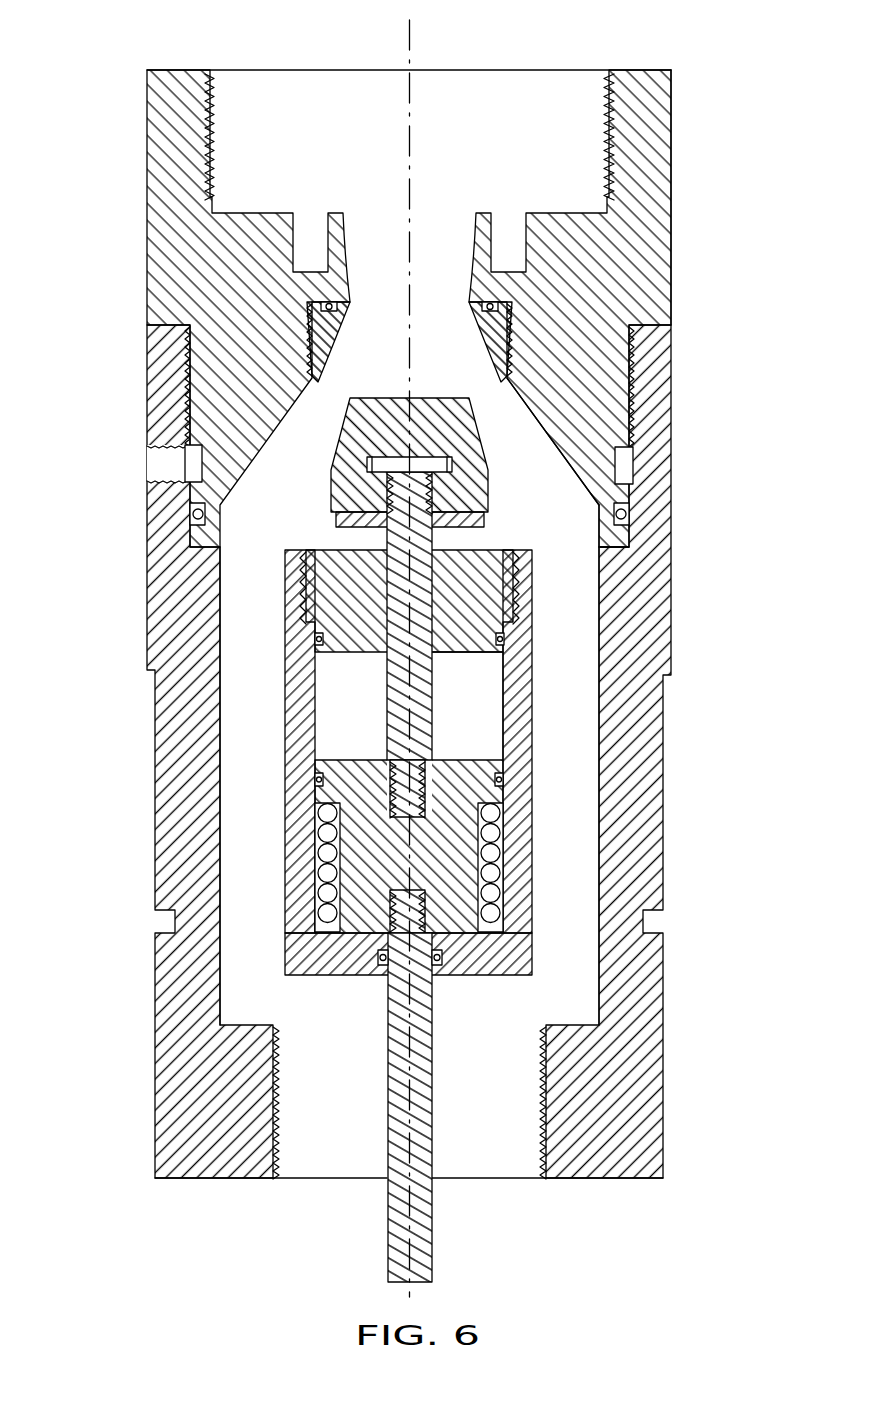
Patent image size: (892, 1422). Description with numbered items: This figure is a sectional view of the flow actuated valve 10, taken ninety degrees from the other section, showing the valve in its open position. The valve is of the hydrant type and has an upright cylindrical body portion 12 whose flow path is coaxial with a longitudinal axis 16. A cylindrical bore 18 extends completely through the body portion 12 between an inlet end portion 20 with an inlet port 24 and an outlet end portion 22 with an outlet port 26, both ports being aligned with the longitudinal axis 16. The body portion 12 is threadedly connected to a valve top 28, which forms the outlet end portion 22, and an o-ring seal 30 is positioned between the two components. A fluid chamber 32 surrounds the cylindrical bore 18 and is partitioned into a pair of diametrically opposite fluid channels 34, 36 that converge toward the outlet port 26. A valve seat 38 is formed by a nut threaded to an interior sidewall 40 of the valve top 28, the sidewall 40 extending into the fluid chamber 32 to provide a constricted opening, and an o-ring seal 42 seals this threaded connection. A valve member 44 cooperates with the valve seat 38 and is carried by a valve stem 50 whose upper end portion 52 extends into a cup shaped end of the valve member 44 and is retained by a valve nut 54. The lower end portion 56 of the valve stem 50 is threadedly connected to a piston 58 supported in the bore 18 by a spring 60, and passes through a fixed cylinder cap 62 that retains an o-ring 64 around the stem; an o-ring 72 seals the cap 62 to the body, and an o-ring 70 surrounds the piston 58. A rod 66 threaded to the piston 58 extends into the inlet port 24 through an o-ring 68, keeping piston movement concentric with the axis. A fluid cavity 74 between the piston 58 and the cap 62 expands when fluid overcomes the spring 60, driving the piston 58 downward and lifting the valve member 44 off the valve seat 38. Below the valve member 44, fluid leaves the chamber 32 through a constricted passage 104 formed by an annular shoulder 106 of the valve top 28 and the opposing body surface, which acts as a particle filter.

The flow actuated valve 10 is at (130, 56).
The body portion 12 is at (185, 757).
The longitudinal axis 16 is at (420, 42).
The cylindrical bore 18 is at (319, 693).
The inlet end portion 20 is at (632, 1080).
The outlet end portion 22 is at (672, 108).
The inlet port 24 is at (278, 1140).
The outlet port 26 is at (212, 100).
The valve top 28 is at (175, 150).
The o-ring seal 30 is at (626, 516).
The fluid chamber 32 is at (515, 450).
The fluid channel 34 is at (250, 885).
The fluid channel 36 is at (558, 957).
The valve seat 38 is at (493, 347).
The interior sidewall 40 is at (285, 305).
The o-ring seal 42 is at (337, 306).
The valve member 44 is at (350, 441).
The valve stem 50 is at (403, 692).
The upper end portion 52 is at (417, 490).
The valve nut 54 is at (486, 520).
The lower end portion 56 is at (433, 760).
The piston 58 is at (375, 912).
The spring 60 is at (493, 818).
The cylinder cap 62 is at (320, 580).
The o-ring 64 is at (508, 617).
The rod 66 is at (402, 1213).
The o-ring 68 is at (440, 962).
The o-ring 70 is at (318, 780).
The o-ring 72 is at (315, 640).
The fluid cavity 74 is at (465, 672).
The constricted passage 104 is at (221, 547).
The annular shoulder 106 is at (605, 523).